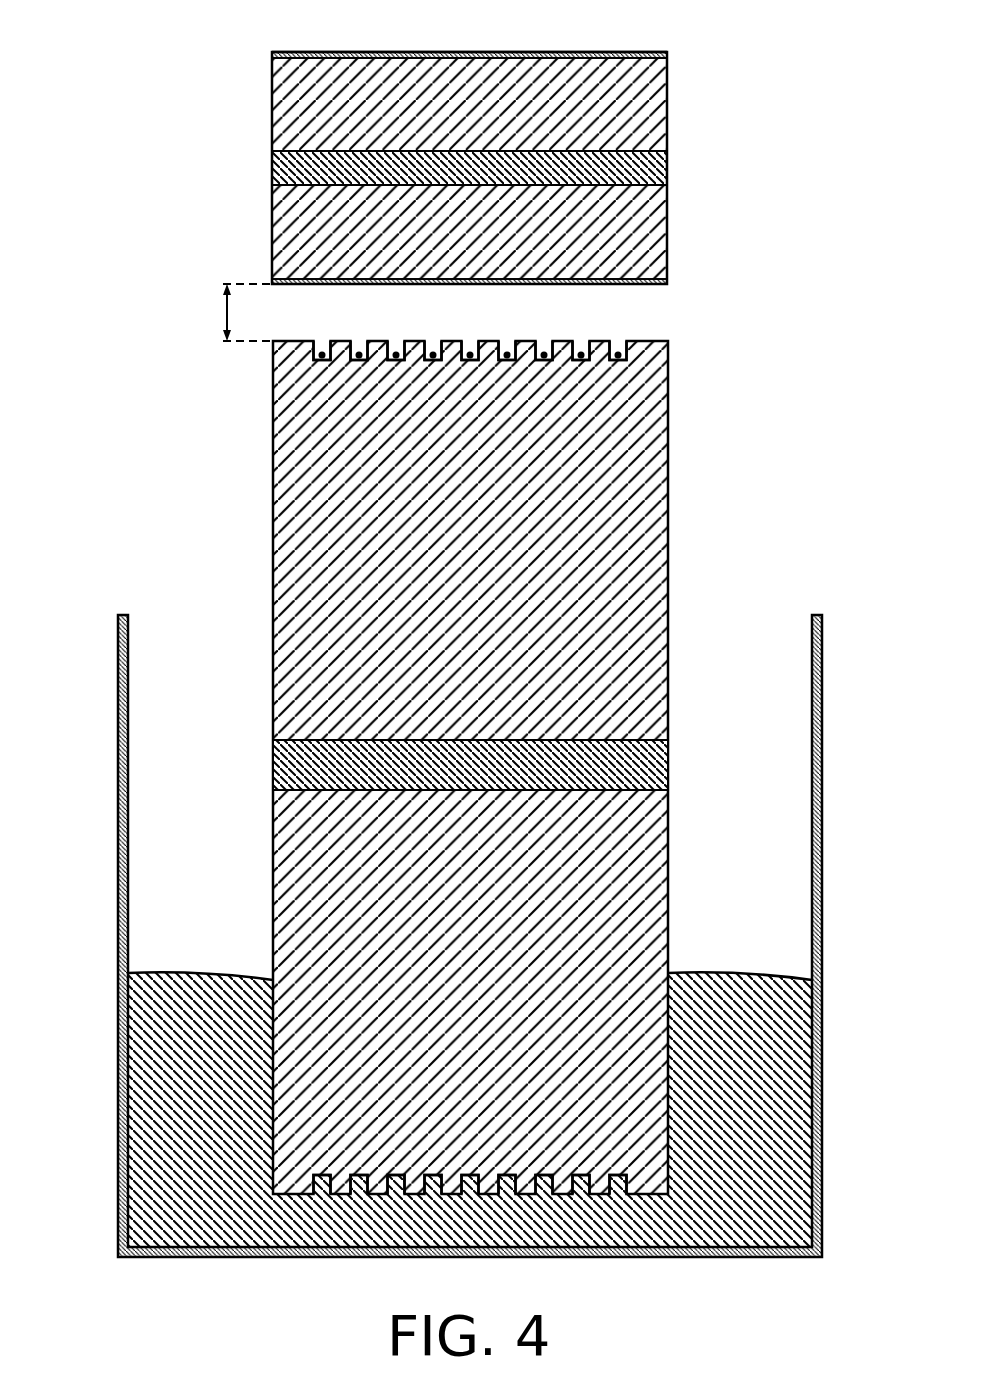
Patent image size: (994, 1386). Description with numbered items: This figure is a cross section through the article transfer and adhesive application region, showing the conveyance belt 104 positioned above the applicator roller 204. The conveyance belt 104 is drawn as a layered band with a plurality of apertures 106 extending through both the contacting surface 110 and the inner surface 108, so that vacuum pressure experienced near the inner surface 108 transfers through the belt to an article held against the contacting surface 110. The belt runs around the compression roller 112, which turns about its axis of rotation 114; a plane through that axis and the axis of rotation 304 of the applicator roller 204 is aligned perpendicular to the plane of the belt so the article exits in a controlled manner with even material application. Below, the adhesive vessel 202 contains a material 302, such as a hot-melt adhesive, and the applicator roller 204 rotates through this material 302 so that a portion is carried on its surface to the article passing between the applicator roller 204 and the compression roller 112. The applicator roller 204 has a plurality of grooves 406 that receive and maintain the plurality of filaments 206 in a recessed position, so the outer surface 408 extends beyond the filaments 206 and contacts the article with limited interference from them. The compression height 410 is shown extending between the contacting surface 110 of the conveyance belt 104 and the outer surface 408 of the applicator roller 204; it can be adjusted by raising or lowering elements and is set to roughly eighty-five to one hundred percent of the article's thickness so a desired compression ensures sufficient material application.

The conveyance belt 104 is at (467, 166).
The plurality of apertures 106 is at (403, 38).
The inner surface 108 is at (650, 62).
The contacting surface 110 is at (604, 52).
The compression roller 112 is at (290, 93).
The axis of rotation 114 is at (667, 162).
The adhesive vessel 202 is at (118, 692).
The applicator roller 204 is at (460, 800).
The plurality of filaments 206 is at (617, 358).
The material 302 is at (165, 1122).
The axis of rotation 304 is at (295, 768).
The plurality of grooves 406 is at (578, 1204).
The outer surface 408 is at (598, 341).
The compression height 410 is at (223, 312).